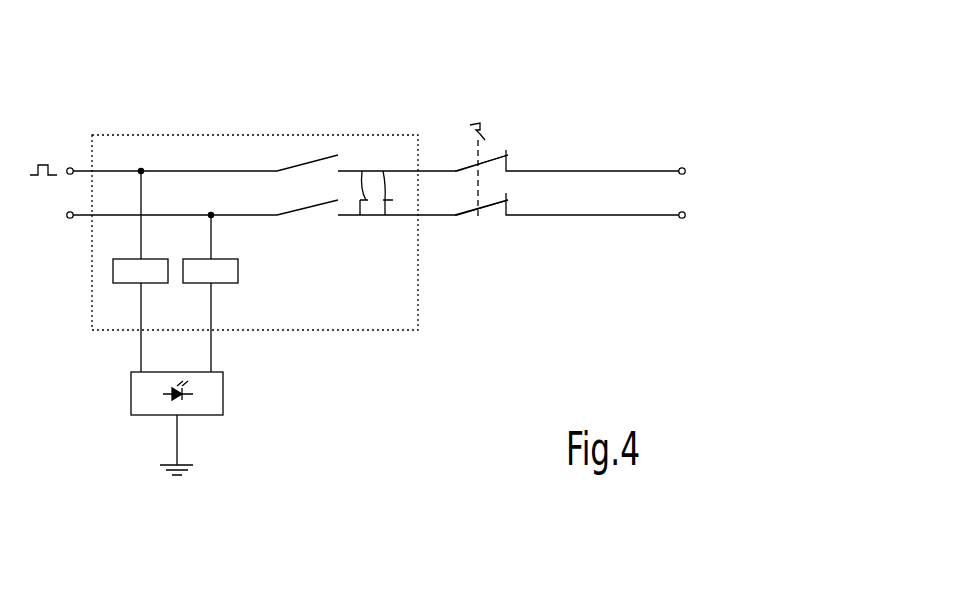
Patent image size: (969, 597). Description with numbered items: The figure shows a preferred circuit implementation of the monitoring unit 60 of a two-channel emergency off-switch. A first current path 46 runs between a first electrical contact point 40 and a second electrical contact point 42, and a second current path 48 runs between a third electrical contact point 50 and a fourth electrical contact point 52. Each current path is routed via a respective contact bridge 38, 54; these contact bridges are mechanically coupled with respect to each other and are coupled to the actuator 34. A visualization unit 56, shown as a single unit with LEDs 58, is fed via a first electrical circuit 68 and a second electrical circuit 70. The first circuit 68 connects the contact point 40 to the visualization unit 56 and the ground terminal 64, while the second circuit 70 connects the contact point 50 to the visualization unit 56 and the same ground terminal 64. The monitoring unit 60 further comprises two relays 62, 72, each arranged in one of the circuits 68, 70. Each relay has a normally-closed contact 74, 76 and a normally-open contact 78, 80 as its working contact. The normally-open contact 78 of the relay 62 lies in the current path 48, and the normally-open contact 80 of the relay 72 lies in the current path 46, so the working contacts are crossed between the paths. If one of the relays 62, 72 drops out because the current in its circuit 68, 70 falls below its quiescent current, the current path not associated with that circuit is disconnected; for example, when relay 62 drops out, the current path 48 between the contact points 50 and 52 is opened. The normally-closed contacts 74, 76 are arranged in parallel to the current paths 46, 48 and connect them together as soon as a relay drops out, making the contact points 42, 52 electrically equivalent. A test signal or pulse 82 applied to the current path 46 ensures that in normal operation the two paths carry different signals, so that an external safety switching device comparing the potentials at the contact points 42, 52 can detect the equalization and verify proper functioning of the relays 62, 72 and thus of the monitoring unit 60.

The actuator 34 is at (487, 133).
The contact bridge 38 is at (473, 165).
The first electrical contact point 40 is at (70, 167).
The second electrical contact point 42 is at (685, 168).
The first current path 46 is at (593, 170).
The second current path 48 is at (610, 215).
The third electrical contact point 50 is at (68, 218).
The fourth electrical contact point 52 is at (685, 216).
The contact bridge 54 is at (493, 205).
The visualization unit 56 is at (131, 390).
The LEDs 58 is at (180, 396).
The monitoring unit 60 is at (297, 135).
The relay 62 is at (140, 268).
The ground terminal 64 is at (163, 472).
The first electrical circuit 68 is at (138, 197).
The second electrical circuit 70 is at (211, 250).
The relay 72 is at (225, 268).
The normally-closed contact 74 is at (362, 178).
The normally-closed contact 76 is at (387, 216).
The normally-open contact 78 is at (308, 207).
The normally-open contact 80 is at (320, 160).
The test signal or pulse 82 is at (42, 163).